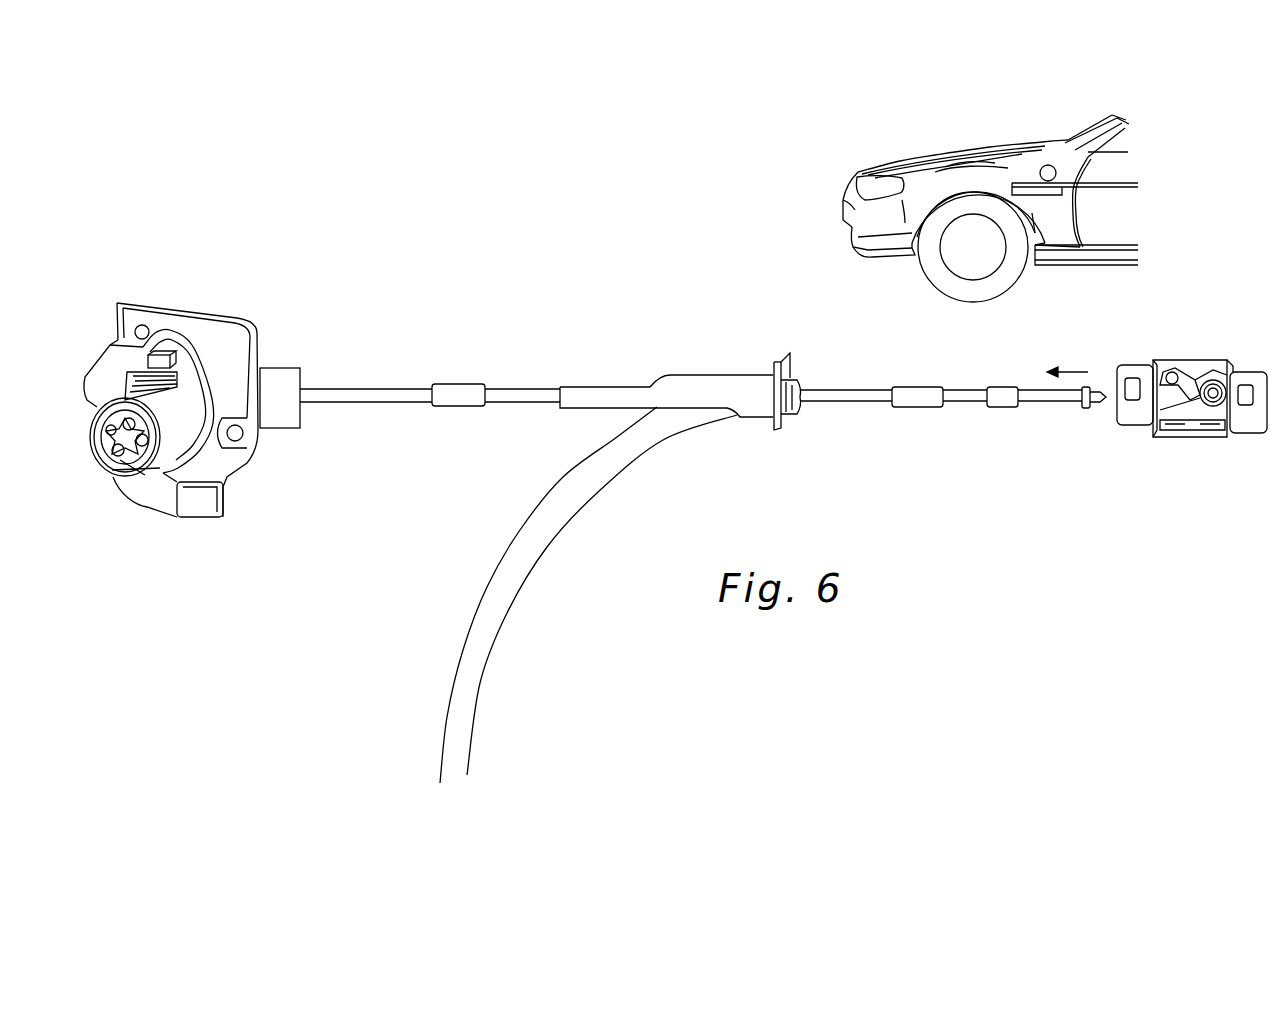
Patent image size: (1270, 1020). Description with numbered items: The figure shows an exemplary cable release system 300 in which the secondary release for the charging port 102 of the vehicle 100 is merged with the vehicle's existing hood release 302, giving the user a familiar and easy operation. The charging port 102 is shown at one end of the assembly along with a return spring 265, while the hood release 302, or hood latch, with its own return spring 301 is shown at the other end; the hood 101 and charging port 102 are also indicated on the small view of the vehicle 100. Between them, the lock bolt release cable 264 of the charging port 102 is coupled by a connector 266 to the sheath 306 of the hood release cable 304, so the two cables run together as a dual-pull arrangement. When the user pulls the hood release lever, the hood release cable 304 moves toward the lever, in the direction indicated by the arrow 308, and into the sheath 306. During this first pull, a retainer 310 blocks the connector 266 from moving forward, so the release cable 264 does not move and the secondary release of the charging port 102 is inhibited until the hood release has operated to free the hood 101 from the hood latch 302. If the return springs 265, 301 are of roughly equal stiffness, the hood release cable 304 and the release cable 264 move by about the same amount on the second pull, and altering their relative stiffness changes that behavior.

The vehicle 100 is at (932, 113).
The hood 101 is at (892, 161).
The charging port 102 is at (1048, 166).
The release cable 264 is at (405, 404).
The return spring 265 is at (283, 368).
The connector 266 is at (685, 385).
The cable release system 300 is at (513, 373).
The return spring 301 is at (1177, 388).
The hood release 302 is at (1137, 418).
The hood release cable 304 is at (965, 402).
The sheath 306 is at (523, 538).
The arrow 308 is at (1073, 372).
The retainer 310 is at (780, 363).